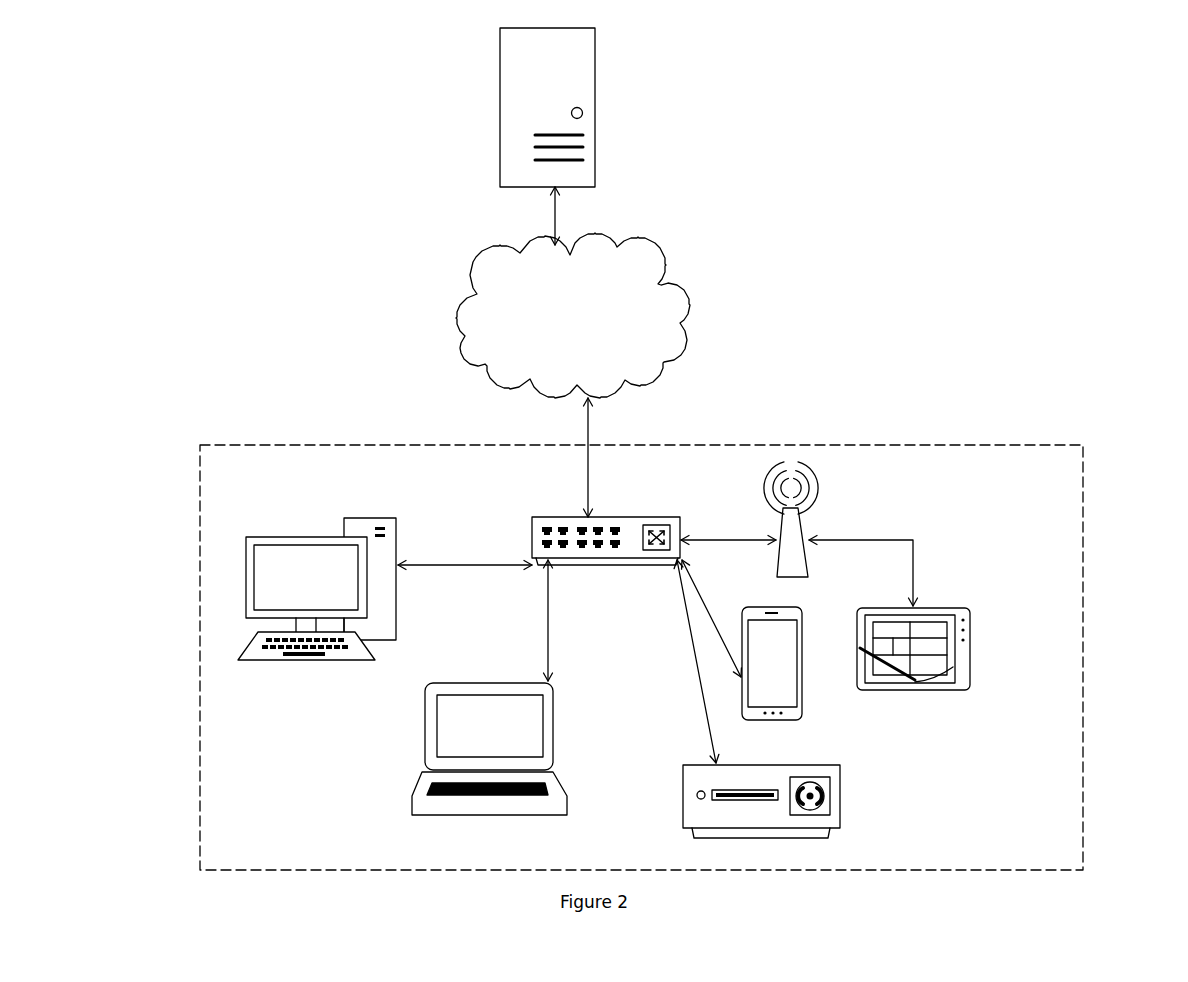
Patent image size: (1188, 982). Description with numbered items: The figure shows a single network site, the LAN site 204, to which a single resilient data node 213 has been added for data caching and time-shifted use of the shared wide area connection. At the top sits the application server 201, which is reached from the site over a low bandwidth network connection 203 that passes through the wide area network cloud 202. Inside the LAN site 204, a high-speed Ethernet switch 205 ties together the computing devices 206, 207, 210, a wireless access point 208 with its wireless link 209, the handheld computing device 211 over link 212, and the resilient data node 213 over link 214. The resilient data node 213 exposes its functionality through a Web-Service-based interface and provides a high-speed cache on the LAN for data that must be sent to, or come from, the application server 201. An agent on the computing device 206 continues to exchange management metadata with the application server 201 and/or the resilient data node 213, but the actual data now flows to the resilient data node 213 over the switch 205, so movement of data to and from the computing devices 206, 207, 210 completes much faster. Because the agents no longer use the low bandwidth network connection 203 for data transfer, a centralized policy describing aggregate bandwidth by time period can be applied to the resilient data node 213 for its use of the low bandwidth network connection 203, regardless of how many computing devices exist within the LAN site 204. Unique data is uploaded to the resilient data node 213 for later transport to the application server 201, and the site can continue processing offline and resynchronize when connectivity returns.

The application server 201 is at (495, 100).
The network cloud (internet) 202 is at (682, 273).
The low bandwidth network connection 203 is at (590, 412).
The LAN site 204 is at (1084, 500).
The Ethernet switch 205 is at (530, 512).
The computing device 206 is at (555, 713).
The computing device 207 is at (355, 512).
The wireless access point 208 is at (833, 500).
The wireless connection to tablet 209 is at (870, 540).
The computing device 210 is at (972, 635).
The smartphone 211 is at (805, 690).
The connection between switch and smartphone 212 is at (690, 565).
The resilient data node 213 is at (840, 765).
The connection between switch and set-top box 214 is at (705, 725).